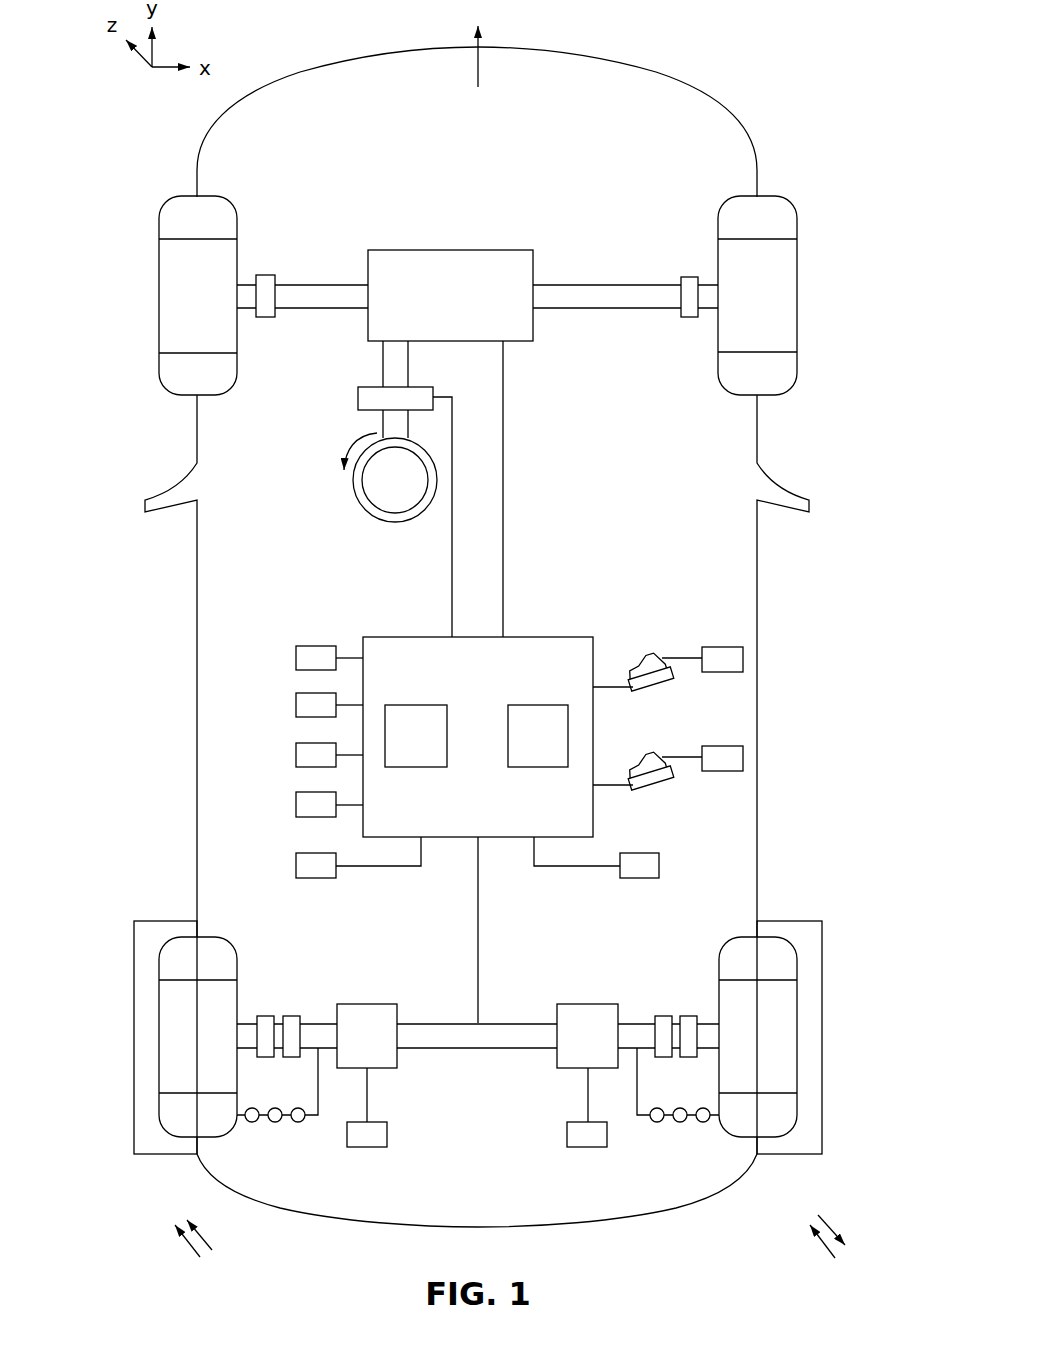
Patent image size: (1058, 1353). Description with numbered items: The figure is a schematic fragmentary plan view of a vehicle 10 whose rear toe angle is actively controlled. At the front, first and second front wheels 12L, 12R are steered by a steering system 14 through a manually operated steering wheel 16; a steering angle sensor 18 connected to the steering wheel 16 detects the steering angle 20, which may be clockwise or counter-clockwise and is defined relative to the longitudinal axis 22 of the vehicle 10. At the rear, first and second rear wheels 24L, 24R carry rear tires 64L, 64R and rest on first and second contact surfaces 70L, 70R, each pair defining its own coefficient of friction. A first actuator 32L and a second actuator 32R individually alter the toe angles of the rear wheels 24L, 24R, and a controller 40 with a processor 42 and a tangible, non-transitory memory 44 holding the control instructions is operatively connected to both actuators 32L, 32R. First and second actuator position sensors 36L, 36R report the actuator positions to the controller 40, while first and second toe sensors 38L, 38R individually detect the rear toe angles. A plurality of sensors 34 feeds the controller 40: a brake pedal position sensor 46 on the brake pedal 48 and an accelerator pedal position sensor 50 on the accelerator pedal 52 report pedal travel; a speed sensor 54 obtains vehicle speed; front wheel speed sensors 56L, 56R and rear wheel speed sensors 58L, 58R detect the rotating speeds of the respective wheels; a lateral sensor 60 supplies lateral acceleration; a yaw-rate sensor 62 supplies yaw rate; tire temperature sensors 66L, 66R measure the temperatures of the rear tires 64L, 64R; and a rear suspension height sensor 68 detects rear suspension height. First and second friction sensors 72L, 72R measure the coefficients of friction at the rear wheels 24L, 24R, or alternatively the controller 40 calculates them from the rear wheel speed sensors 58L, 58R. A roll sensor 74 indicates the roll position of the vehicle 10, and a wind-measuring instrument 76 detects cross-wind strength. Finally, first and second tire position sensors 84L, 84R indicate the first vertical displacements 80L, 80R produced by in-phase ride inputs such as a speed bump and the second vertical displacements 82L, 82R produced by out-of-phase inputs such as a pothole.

The vehicle 10 is at (762, 48).
The first front wheel 12L is at (158, 298).
The second front wheel 12R is at (799, 295).
The steering system 14 is at (447, 236).
The steering wheel 16 is at (398, 522).
The steering angle sensor 18 is at (377, 386).
The steering angle 20 is at (377, 433).
The longitudinal axis 22 is at (477, 58).
The first rear wheel 24L is at (158, 1035).
The second rear wheel 24R is at (797, 1035).
The first actuator 32L is at (367, 1003).
The second actuator 32R is at (588, 1003).
The plurality of sensors 34 is at (165, 593).
The first actuator position sensor 36L is at (367, 1147).
The second actuator position sensor 36R is at (588, 1147).
The first toe sensor 38L is at (267, 1058).
The second toe sensor 38R is at (690, 1058).
The controller 40 is at (413, 636).
The processor 42 is at (417, 704).
The memory 44 is at (537, 704).
The brake pedal position sensor 46 is at (743, 662).
The brake pedal 48 is at (657, 688).
The accelerator pedal position sensor 50 is at (743, 761).
The accelerator pedal 52 is at (657, 787).
The speed sensor 54 is at (303, 692).
The front wheel speed sensor 56L is at (263, 275).
The front wheel speed sensor 56R is at (692, 277).
The rear wheel speed sensor 58L is at (290, 1015).
The rear wheel speed sensor 58R is at (663, 1015).
The lateral sensor 60 is at (303, 742).
The yaw-rate sensor 62 is at (303, 645).
The rear tire 64L is at (150, 1120).
The rear tire 64R is at (812, 948).
The tire temperature sensor 66L is at (275, 1123).
The tire temperature sensor 66R is at (680, 1123).
The rear suspension height sensor 68 is at (303, 791).
The first contact surface 70L is at (167, 920).
The second contact surface 70R is at (790, 920).
The first friction sensor 72L is at (252, 1123).
The second friction sensor 72R is at (703, 1123).
The roll sensor 74 is at (303, 852).
The wind-measuring instrument 76 is at (640, 852).
The first vertical displacement 80L is at (188, 1248).
The first vertical displacement 80R is at (820, 1245).
The second vertical displacement 82L is at (200, 1228).
The second vertical displacement 82R is at (835, 1230).
The first tire position sensor 84L is at (298, 1123).
The second tire position sensor 84R is at (657, 1123).